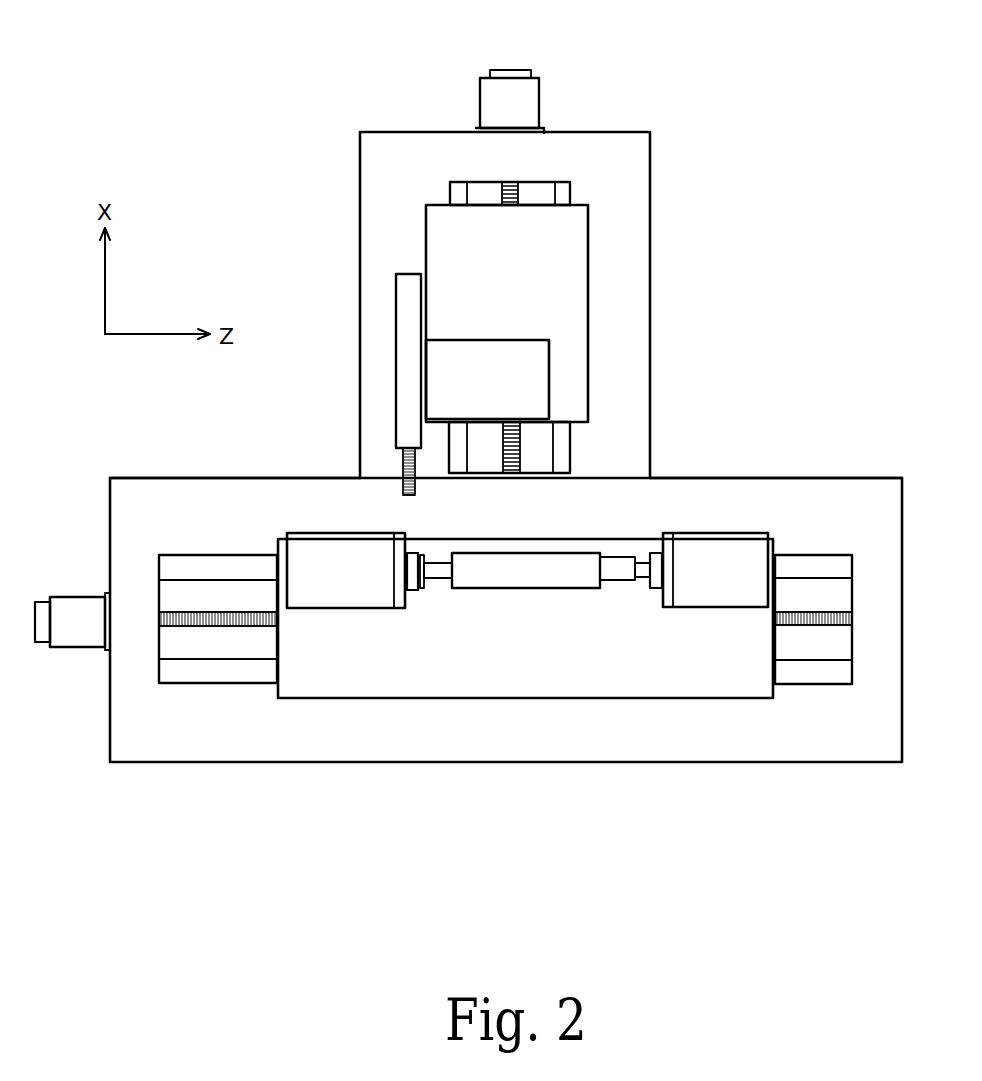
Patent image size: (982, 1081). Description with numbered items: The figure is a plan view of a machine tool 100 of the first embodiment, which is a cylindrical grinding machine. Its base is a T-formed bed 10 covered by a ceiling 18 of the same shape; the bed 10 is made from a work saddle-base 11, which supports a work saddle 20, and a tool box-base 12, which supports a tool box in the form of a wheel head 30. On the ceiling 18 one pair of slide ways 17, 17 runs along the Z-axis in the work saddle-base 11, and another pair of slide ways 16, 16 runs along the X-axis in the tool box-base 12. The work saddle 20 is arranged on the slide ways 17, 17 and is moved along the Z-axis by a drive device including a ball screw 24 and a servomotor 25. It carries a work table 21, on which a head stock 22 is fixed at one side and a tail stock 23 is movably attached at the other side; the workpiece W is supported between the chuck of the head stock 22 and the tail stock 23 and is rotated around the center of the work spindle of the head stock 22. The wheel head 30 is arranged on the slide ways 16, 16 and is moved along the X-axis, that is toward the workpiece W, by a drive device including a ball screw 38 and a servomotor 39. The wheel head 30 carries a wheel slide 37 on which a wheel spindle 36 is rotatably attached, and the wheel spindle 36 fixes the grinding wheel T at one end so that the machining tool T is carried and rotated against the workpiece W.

The machine tool 100 is at (725, 142).
The bed 10 is at (820, 478).
The work saddle-base 11 is at (687, 502).
The tool box-base 12 is at (628, 377).
The slide ways 16 is at (465, 198).
The slide ways 17 is at (812, 567).
The ceiling 18 is at (283, 505).
The work saddle 20 is at (647, 700).
The work table 21 is at (572, 673).
The head stock 22 is at (342, 597).
The tail stock 23 is at (735, 592).
The ball screw 24 is at (197, 628).
The servomotor 25 is at (75, 633).
The tool box (wheel head) 30 is at (595, 298).
The wheel spindle 36 is at (465, 363).
The wheel slide 37 is at (545, 257).
The ball screw 38 is at (521, 182).
The servomotor 39 is at (533, 101).
The grinding wheel (machining tool) T is at (402, 495).
The workpiece W is at (508, 592).